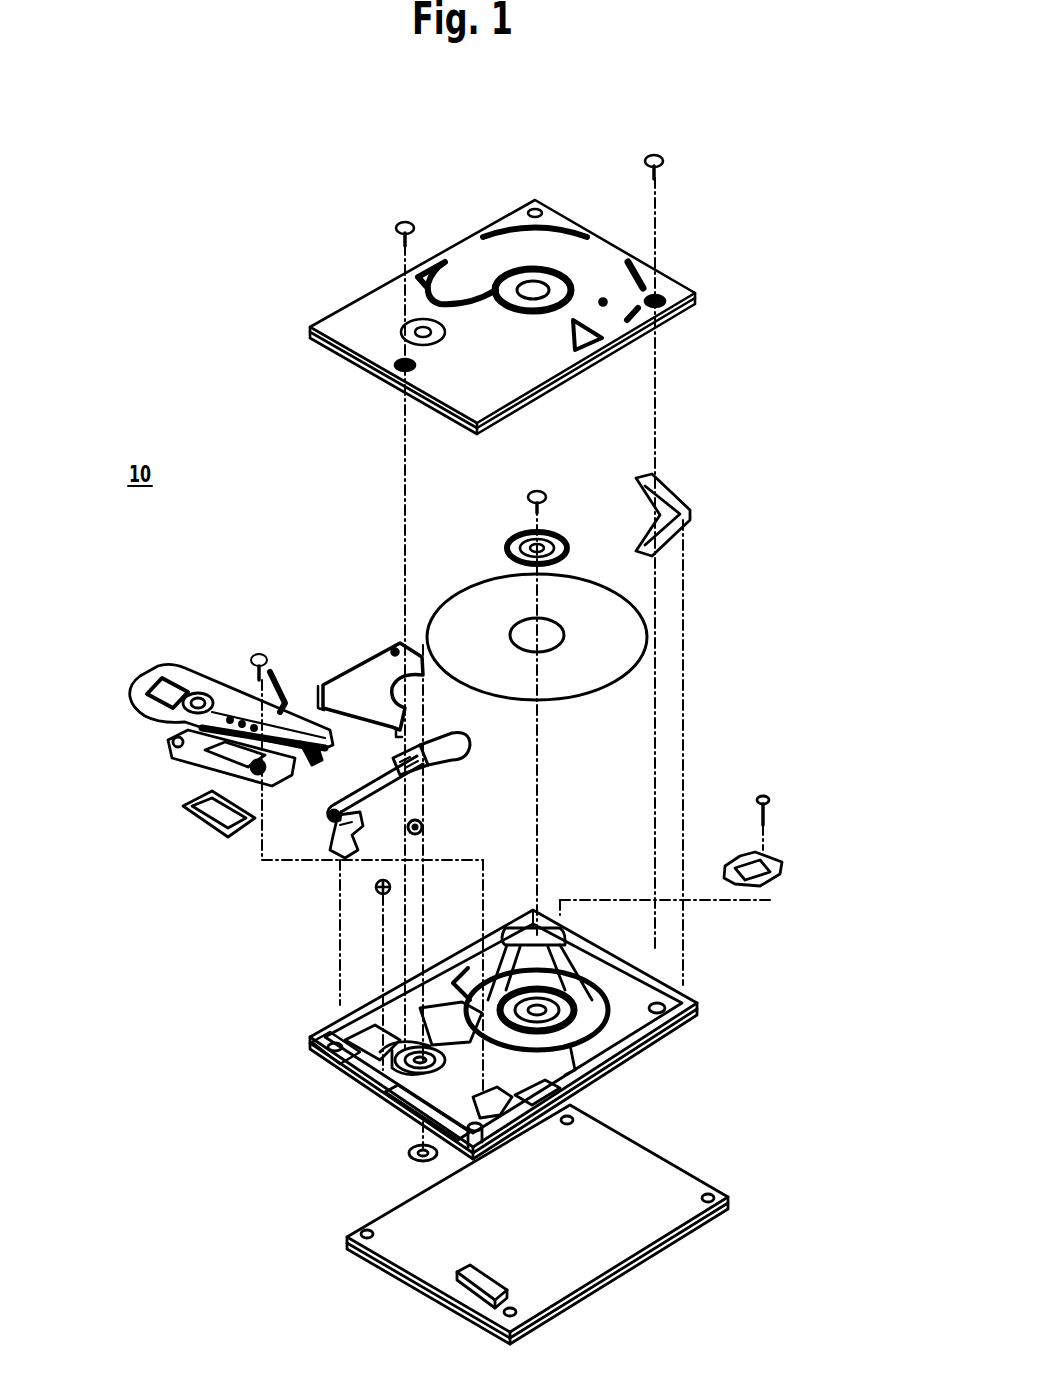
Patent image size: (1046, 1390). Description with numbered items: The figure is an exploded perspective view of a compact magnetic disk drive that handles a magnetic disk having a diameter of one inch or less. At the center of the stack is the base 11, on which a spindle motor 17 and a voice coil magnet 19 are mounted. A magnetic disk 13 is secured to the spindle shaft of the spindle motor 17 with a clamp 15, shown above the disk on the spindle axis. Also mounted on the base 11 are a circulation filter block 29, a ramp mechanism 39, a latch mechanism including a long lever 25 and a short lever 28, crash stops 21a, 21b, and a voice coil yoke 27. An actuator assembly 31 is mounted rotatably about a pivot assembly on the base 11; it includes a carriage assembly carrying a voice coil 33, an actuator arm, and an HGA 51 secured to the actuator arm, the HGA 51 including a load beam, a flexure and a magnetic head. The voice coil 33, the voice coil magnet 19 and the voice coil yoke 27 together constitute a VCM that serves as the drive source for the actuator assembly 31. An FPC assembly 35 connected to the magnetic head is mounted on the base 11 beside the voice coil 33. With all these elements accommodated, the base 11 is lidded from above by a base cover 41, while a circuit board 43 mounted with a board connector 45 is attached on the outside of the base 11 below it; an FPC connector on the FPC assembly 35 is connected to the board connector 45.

The base 11 is at (647, 1052).
The magnetic disk 13 is at (580, 700).
The clamp 15 is at (552, 528).
The spindle motor 17 is at (590, 985).
The voice coil magnet 19 is at (310, 1057).
The crash stop 21a is at (424, 826).
The crash stop 21b is at (378, 893).
The long lever 25 is at (466, 750).
The voice coil yoke 27 is at (390, 650).
The short lever 28 is at (322, 854).
The circulation filter block 29 is at (670, 492).
The actuator assembly 31 is at (200, 676).
The voice coil 33 is at (162, 684).
The FPC assembly 35 is at (162, 760).
The ramp mechanism 39 is at (775, 850).
The base cover 41 is at (670, 268).
The circuit board 43 is at (655, 1256).
The board connector 45 is at (490, 1272).
The HGA 51 is at (318, 760).